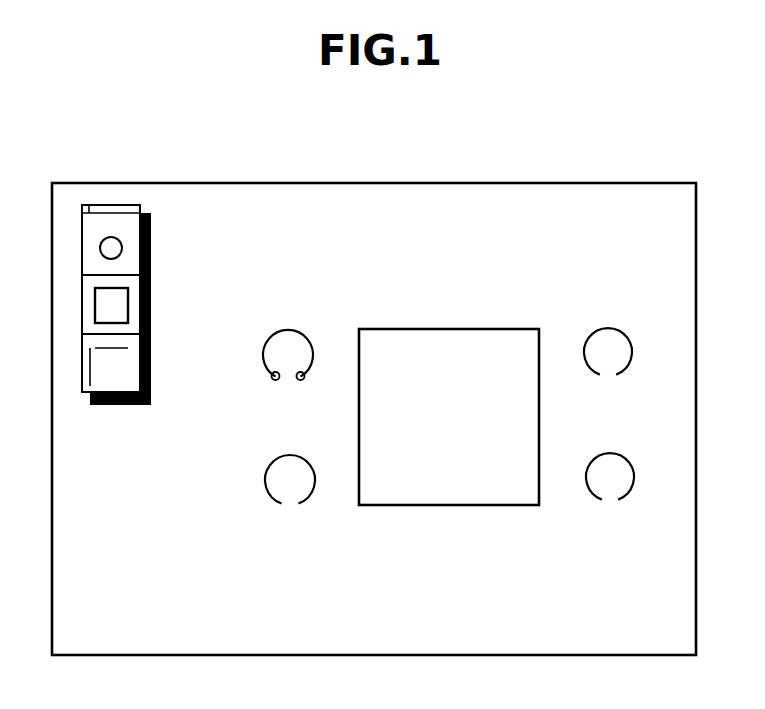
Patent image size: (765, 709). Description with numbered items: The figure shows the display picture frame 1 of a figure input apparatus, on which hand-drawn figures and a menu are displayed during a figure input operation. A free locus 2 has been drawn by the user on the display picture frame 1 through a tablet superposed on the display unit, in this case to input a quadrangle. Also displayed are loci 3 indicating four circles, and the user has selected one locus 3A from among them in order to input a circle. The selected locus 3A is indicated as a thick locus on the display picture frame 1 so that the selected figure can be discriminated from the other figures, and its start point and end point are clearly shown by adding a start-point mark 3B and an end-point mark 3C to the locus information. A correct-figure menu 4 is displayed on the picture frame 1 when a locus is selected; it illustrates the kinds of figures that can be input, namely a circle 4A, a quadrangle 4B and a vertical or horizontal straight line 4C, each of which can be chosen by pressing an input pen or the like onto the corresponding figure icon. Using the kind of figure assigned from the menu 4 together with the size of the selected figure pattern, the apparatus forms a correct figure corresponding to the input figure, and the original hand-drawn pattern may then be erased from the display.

The display picture frame 1 is at (613, 181).
The free locus 2 is at (485, 332).
The loci 3 is at (623, 338).
The locus 3A is at (292, 334).
The start-point mark 3B is at (270, 381).
The end-point mark 3C is at (301, 381).
The correct-figure menu 4 is at (118, 204).
The circle 4A is at (133, 243).
The quadrangle 4B is at (137, 303).
The vertical or horizontal straight line 4C is at (131, 371).